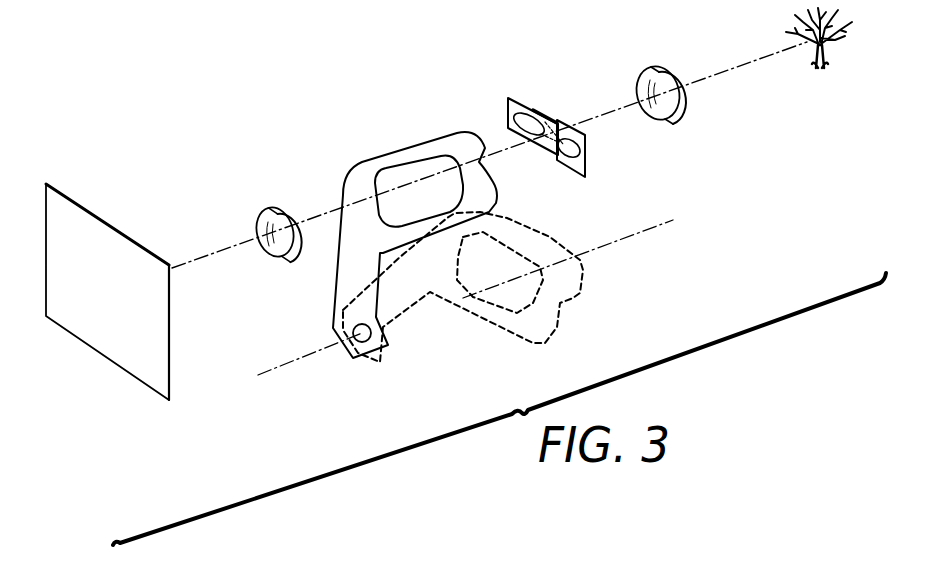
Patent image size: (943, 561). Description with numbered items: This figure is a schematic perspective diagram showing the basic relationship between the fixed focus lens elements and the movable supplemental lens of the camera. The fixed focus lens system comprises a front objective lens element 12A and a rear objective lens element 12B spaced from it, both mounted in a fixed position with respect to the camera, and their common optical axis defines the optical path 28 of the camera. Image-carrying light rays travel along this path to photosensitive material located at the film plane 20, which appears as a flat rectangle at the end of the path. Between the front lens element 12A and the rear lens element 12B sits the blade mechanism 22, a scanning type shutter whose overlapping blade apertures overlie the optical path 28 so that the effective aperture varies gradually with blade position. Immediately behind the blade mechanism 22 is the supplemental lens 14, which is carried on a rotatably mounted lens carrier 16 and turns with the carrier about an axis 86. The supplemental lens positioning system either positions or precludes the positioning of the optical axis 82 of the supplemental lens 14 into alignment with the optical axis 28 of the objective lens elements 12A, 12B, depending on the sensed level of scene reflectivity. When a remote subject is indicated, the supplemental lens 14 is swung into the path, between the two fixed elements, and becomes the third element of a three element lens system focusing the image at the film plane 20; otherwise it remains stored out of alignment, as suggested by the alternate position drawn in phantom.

The front objective lens element 12A is at (651, 72).
The rear objective lens element 12B is at (278, 208).
The supplemental lens 14 is at (408, 172).
The lens carrier 16 is at (343, 190).
The film plane 20 is at (100, 240).
The blade mechanism 22 is at (537, 92).
The optical path 28 is at (221, 250).
The optical axis of the supplemental lens 82 is at (613, 240).
The axis 86 is at (283, 366).